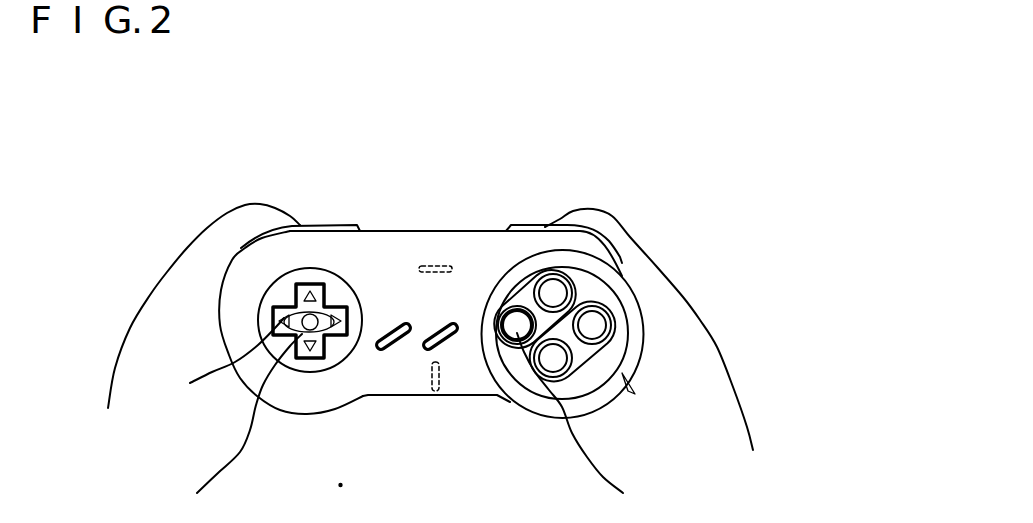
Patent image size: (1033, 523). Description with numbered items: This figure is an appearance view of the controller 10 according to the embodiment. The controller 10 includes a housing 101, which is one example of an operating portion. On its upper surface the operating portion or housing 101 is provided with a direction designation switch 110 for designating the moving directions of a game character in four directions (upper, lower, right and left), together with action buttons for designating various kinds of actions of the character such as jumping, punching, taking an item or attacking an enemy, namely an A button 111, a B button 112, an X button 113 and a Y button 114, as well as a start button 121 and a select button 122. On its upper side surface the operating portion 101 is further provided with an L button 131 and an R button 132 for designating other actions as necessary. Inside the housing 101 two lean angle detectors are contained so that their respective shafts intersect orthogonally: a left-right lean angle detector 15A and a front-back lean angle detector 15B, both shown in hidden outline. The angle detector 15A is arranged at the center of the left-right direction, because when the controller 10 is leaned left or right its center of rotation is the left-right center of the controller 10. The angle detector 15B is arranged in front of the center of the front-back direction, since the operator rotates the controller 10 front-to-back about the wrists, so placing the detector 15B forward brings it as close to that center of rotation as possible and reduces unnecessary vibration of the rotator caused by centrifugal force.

The controller 10 is at (718, 112).
The housing 101 is at (470, 231).
The direction designation switch 110 is at (284, 316).
The A button 111 is at (593, 326).
The B button 112 is at (553, 358).
The X button 113 is at (557, 290).
The Y button 114 is at (517, 333).
The start button 121 is at (448, 322).
The select button 122 is at (398, 322).
The L button 131 is at (356, 226).
The R button 132 is at (544, 225).
The left-right lean angle detector 15A is at (419, 265).
The front-back lean angle detector 15B is at (429, 388).